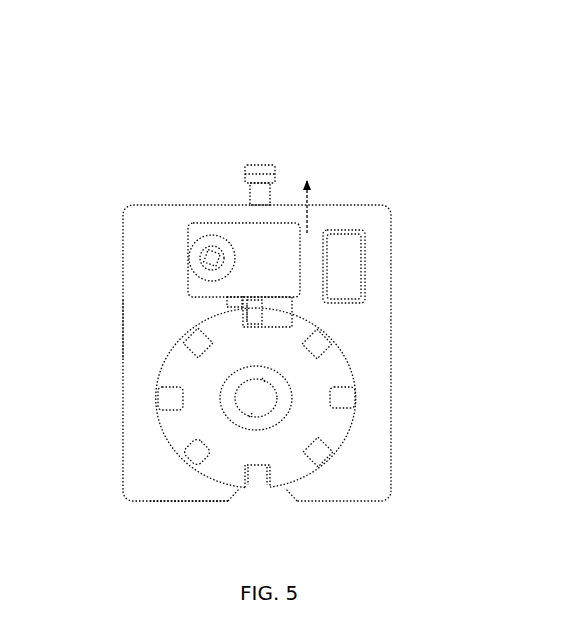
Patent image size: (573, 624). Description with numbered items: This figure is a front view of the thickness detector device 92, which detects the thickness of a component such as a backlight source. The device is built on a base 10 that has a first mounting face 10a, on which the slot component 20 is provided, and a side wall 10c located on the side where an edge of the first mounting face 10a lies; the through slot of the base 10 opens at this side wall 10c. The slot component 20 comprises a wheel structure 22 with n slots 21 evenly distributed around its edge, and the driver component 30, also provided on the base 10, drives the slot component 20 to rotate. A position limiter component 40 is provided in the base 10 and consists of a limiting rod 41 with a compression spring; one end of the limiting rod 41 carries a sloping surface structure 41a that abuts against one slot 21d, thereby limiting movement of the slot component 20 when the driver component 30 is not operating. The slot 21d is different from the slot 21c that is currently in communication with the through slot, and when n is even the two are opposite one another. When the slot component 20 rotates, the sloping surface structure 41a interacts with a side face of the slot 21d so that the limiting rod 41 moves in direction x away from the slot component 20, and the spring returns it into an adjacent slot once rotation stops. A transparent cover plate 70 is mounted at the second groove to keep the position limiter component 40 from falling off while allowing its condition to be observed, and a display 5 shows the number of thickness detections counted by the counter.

The thickness detector device 92 is at (110, 95).
The base 10 is at (119, 243).
The first mounting face 10a is at (147, 332).
The side wall 10c is at (197, 502).
The position limiter component 40 is at (327, 126).
The limiting rod 41 is at (267, 171).
The sloping surface structure 41a is at (298, 330).
The cover plate 70 is at (205, 287).
The display 5 is at (339, 263).
The slot component 20 is at (440, 332).
The slots 21 is at (345, 397).
The slot 21c is at (359, 329).
The slot 21d is at (252, 326).
The wheel structure 22 is at (327, 366).
The driver component 30 is at (251, 400).